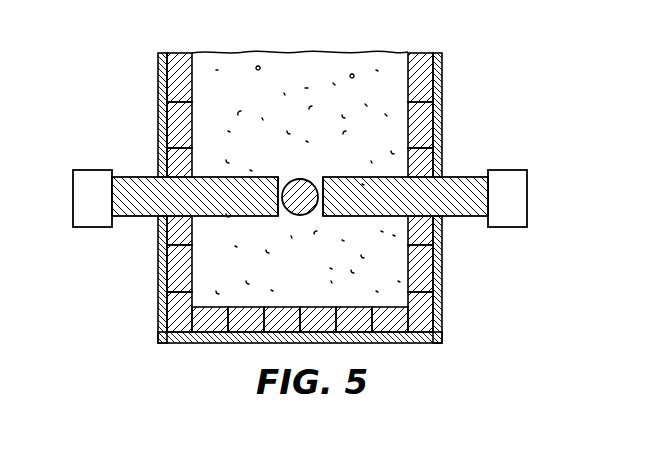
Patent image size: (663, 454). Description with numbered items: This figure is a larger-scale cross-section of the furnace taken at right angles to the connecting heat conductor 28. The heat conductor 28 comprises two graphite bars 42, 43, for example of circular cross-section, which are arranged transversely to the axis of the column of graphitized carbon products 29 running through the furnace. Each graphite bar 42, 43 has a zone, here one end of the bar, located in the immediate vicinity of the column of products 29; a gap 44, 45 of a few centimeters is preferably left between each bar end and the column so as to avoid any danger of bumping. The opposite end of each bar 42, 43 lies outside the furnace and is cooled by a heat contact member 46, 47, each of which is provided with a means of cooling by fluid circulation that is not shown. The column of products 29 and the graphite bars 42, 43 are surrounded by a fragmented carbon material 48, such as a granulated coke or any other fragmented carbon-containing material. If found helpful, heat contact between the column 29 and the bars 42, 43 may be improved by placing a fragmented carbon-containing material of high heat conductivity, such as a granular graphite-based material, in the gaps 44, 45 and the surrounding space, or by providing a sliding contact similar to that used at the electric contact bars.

The connecting heat conductor 28 is at (109, 229).
The column of graphitized carbon products 29 is at (306, 214).
The graphite bar 42 is at (141, 210).
The graphite bar 43 is at (465, 208).
The gap 44 is at (284, 182).
The gap 45 is at (320, 180).
The heat contact member 46 is at (73, 185).
The heat contact member 47 is at (512, 214).
The fragmented carbon material 48 is at (236, 86).